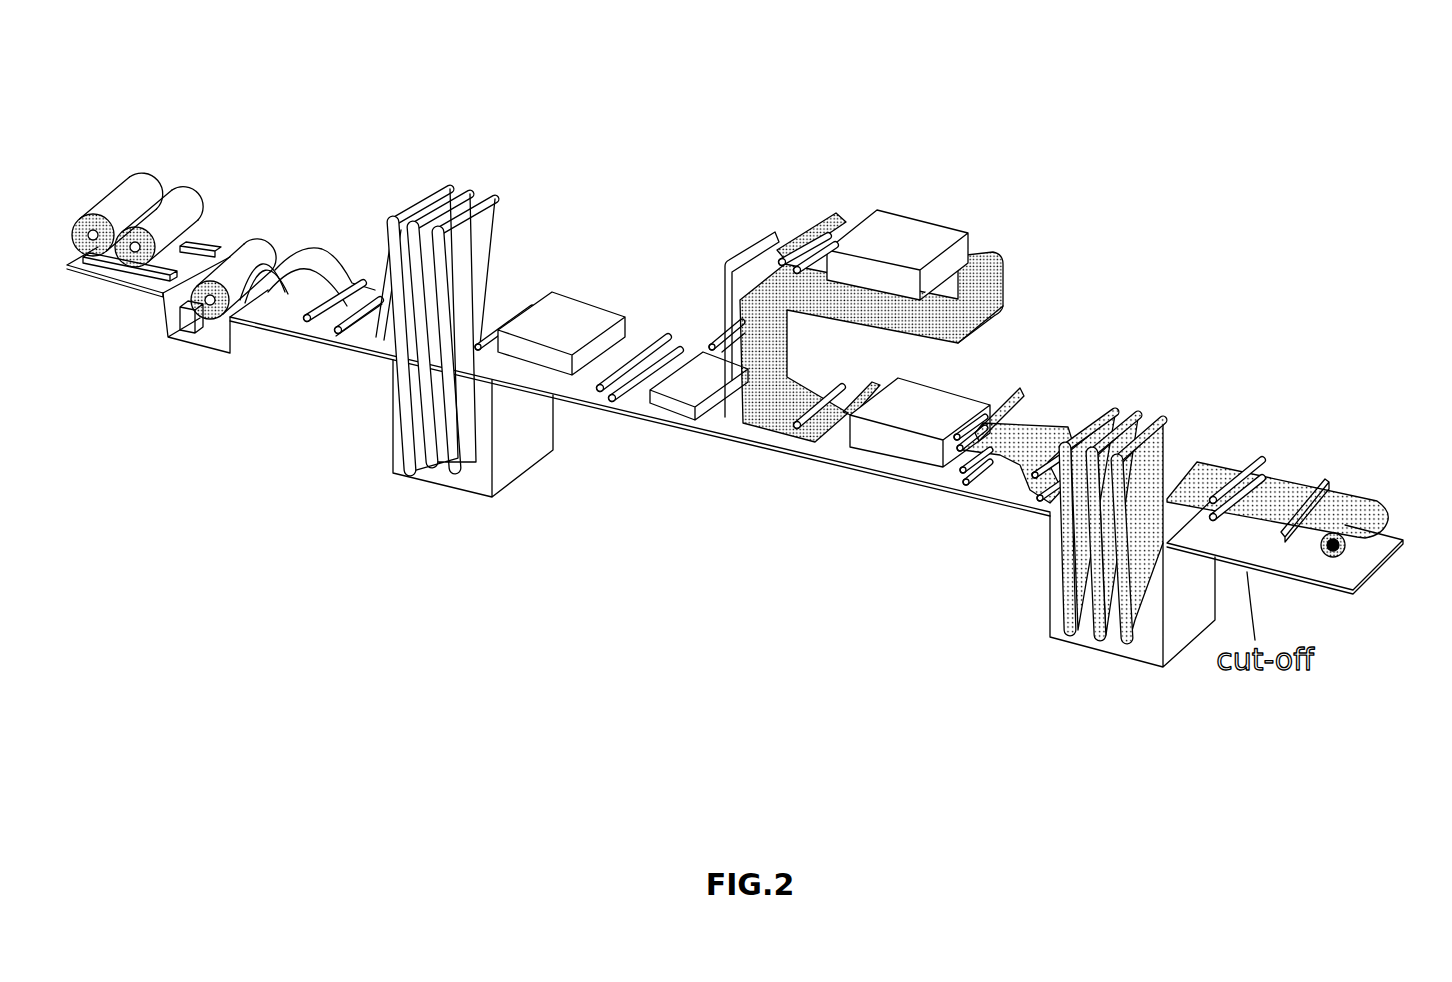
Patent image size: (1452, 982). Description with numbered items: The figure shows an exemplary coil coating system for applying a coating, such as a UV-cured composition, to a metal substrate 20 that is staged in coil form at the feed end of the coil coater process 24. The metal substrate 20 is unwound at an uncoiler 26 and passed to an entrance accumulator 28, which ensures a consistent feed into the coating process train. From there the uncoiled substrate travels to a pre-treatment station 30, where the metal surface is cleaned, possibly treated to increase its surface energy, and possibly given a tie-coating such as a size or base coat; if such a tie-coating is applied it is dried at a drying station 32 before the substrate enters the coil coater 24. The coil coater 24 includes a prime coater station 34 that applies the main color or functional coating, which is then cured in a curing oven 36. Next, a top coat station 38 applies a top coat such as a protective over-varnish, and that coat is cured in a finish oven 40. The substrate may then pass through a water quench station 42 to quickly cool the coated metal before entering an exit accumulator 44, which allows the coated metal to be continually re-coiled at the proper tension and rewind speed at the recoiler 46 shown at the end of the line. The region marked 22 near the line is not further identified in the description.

The metal substrate 20 is at (145, 160).
The conveying platform / line base 22 is at (365, 548).
The coil coater process 24 is at (1035, 152).
The uncoiler 26 is at (270, 342).
The entrance accumulator 28 is at (450, 178).
The pre-treatment station 30 is at (570, 410).
The drying station 32 is at (712, 330).
The prime coater station 34 is at (790, 220).
The curing oven 36 is at (932, 215).
The top coat station 38 is at (762, 460).
The finish oven 40 is at (862, 480).
The water quench station 42 is at (970, 512).
The exit accumulator 44 is at (1155, 420).
The recoiler 46 is at (1358, 490).